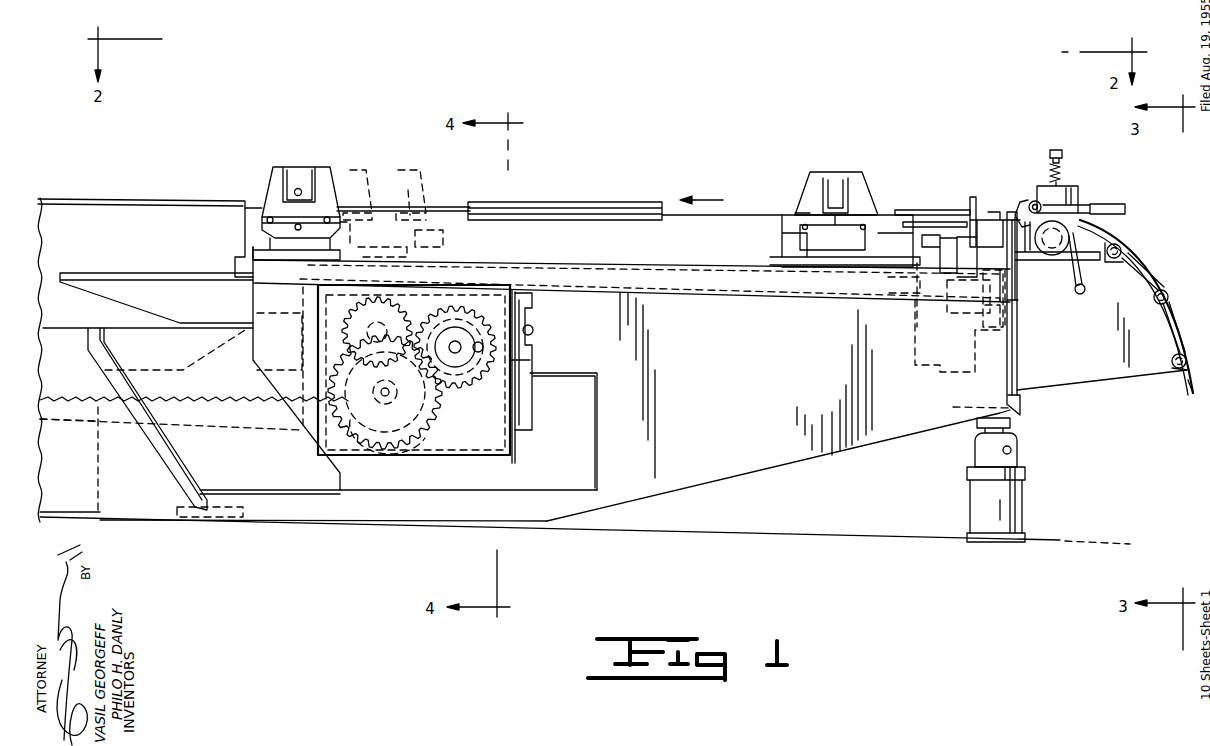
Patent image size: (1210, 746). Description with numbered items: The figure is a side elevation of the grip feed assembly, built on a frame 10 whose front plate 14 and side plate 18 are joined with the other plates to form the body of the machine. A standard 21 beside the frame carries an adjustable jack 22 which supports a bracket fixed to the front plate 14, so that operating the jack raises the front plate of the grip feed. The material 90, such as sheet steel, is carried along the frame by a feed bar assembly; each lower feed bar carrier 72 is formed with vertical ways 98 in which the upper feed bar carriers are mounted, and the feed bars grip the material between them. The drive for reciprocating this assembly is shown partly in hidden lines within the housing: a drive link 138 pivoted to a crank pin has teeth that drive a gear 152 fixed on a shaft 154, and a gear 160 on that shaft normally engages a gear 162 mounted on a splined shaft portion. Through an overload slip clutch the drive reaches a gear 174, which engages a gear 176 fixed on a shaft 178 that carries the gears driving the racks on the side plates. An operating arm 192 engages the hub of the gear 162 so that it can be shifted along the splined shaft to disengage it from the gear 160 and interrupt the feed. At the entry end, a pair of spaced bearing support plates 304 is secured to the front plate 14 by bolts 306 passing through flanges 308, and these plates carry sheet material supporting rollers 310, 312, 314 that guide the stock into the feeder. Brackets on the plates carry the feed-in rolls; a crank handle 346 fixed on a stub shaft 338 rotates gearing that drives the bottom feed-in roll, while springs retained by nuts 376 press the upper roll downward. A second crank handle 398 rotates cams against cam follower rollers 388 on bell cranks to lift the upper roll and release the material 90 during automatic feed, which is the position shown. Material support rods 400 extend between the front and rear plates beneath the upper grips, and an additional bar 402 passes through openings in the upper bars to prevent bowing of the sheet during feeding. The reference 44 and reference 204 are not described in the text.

The frame 10 is at (713, 503).
The front plate 14 is at (1000, 372).
The side plate 18 is at (798, 453).
The standard 21 is at (1022, 512).
The adjustable jack 22 is at (1015, 457).
The bed 44 is at (752, 290).
The lower feed bar carrier 72 is at (407, 190).
The material 90 is at (748, 213).
The vertical ways 98 is at (833, 180).
The drive link 138 is at (67, 422).
The gear 152 is at (447, 390).
The shaft 154 is at (385, 392).
The gear 160 is at (416, 374).
The gear 162 is at (456, 320).
The gear 174 is at (493, 292).
The gear 176 is at (358, 300).
The shaft 178 is at (388, 312).
The operating arm 192 is at (520, 360).
The tool holder 204 is at (338, 170).
The bearing support plate 304 is at (1115, 373).
The bolt 306 is at (1020, 366).
The flange 308 is at (1034, 315).
The sheet material supporting roller 310 is at (1177, 358).
The sheet material supporting roller 312 is at (1153, 297).
The sheet material supporting roller 314 is at (1140, 247).
The stub shaft 338 is at (1037, 257).
The crank handle 346 is at (1110, 230).
The nut 376 is at (1057, 153).
The cam follower roller 388 is at (1022, 200).
The crank handle 398 is at (1082, 202).
The material support rod 400 is at (933, 220).
The bar 402 is at (918, 208).